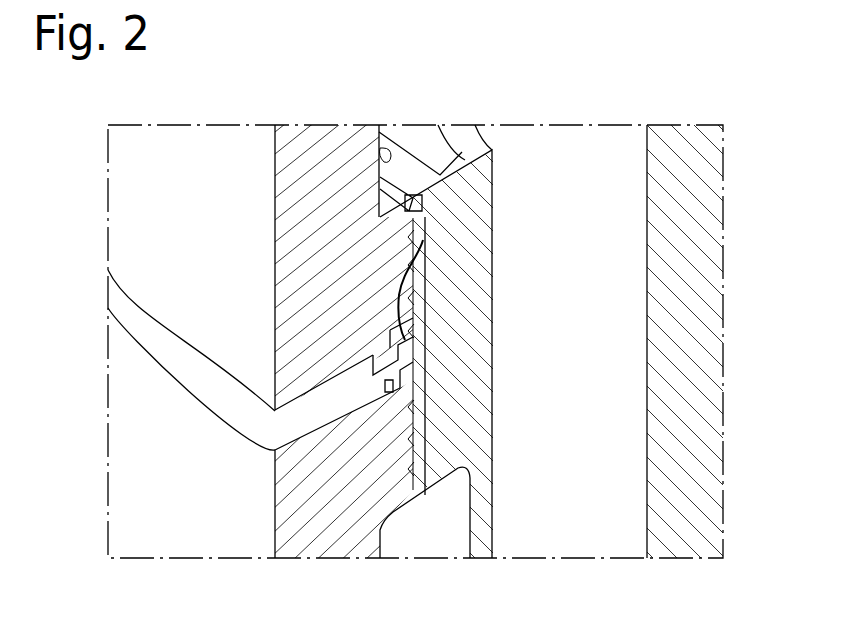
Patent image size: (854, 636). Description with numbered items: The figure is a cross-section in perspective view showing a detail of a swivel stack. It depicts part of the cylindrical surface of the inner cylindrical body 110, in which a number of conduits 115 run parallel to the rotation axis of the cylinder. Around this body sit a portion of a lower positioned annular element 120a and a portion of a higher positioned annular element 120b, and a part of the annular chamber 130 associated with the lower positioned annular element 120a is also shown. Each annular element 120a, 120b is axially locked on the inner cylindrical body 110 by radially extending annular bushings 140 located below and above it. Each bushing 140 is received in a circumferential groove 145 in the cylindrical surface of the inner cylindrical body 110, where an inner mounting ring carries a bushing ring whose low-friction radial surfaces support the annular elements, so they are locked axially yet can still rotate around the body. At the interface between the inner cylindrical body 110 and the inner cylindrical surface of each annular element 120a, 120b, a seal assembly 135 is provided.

The inner cylindrical body 110 is at (480, 200).
The conduits 115 is at (602, 333).
The lower positioned annular element 120a is at (323, 497).
The higher positioned annular element 120b is at (305, 202).
The annular chamber 130 is at (438, 517).
The seal assembly 135 is at (405, 328).
The annular bushing 140 is at (397, 373).
The circumferential groove 145 is at (403, 340).